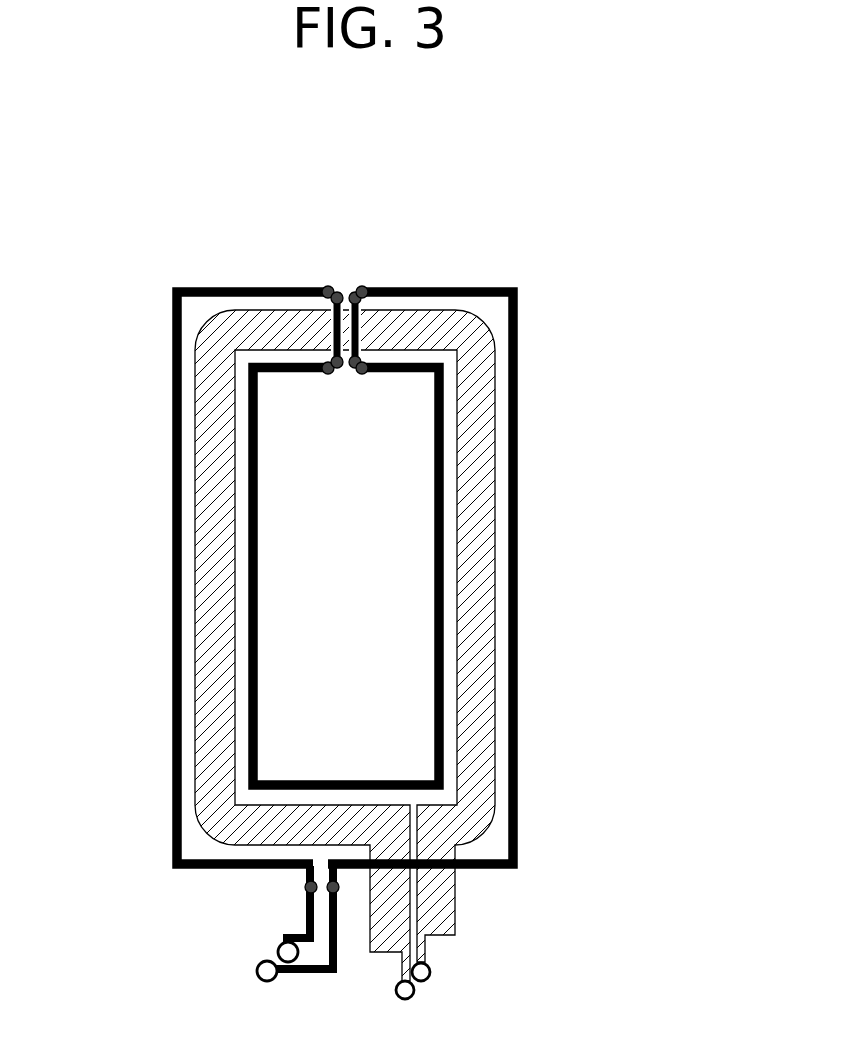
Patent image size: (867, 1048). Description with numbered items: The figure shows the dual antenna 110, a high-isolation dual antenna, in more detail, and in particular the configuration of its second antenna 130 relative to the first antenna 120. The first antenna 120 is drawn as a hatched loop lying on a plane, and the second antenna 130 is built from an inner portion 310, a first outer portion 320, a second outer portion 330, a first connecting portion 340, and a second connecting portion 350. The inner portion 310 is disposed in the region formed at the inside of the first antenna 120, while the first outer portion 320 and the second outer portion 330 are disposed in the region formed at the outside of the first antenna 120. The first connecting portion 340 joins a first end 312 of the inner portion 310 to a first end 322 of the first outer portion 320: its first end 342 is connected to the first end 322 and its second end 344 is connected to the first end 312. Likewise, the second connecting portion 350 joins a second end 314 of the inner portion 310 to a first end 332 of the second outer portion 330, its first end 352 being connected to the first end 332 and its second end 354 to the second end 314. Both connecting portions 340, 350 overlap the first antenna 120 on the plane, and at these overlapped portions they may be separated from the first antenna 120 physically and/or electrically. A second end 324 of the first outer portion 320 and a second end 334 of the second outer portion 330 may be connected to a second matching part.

The dual antenna 110 is at (381, 164).
The first antenna 120 is at (497, 460).
The second antenna 130 is at (518, 518).
The inner portion 310 is at (258, 522).
The first end of the inner portion 312 is at (326, 374).
The second end of the inner portion 314 is at (368, 372).
The first outer portion 320 is at (173, 572).
The first end of the first outer portion 322 is at (324, 288).
The second end of the first outer portion 324 is at (306, 887).
The second outer portion 330 is at (518, 570).
The first end of the second outer portion 332 is at (363, 291).
The second end of the second outer portion 334 is at (337, 892).
The first connecting portion 340 is at (336, 360).
The first end of the first connecting portion 342 is at (336, 296).
The second end of the first connecting portion 344 is at (337, 368).
The second connecting portion 350 is at (358, 307).
The first end of the second connecting portion 352 is at (355, 296).
The second end of the second connecting portion 354 is at (354, 368).